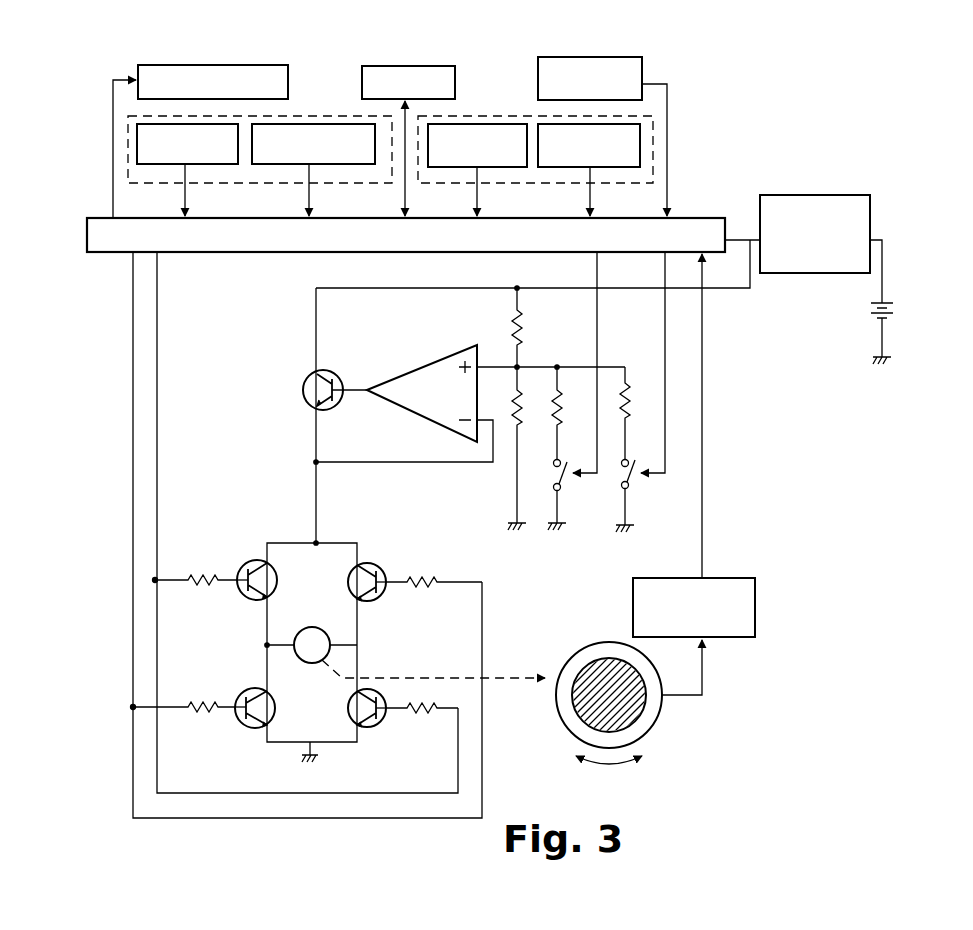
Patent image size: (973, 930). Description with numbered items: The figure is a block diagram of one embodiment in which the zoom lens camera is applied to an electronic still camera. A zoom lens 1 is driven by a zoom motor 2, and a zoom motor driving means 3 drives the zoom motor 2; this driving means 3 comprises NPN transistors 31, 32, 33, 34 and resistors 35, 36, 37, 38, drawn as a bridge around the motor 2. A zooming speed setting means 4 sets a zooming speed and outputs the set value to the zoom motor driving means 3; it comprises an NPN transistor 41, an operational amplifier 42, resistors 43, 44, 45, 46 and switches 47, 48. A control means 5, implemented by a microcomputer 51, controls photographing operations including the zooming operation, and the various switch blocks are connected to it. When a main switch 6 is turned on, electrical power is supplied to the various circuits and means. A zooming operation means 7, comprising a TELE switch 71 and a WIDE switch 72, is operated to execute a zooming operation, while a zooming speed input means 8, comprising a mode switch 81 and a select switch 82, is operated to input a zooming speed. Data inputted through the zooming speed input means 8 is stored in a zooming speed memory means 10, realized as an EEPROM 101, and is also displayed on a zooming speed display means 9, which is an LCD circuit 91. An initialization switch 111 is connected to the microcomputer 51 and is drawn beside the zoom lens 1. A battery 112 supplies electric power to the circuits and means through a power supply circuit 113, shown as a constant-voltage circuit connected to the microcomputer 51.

The zoom lens 1 is at (653, 730).
The zoom motor 2 is at (307, 627).
The zoom motor driving means 3 is at (338, 561).
The zooming speed setting means 4 is at (487, 397).
The control means 5 is at (376, 264).
The microcomputer 51 is at (98, 254).
The main switch 6 is at (615, 57).
The zooming operation means 7 is at (653, 170).
The TELE switch 71 is at (488, 122).
The WIDE switch 72 is at (655, 125).
The zooming speed input means 8 is at (128, 170).
The mode switch 81 is at (137, 145).
The select switch 82 is at (282, 166).
The zooming speed display means 9 is at (201, 113).
The LCD circuit 91 is at (251, 65).
The zooming speed memory means 10 is at (419, 112).
The EEPROM 101 is at (434, 66).
The initialization switch 111 is at (757, 622).
The battery 112 is at (898, 307).
The power supply circuit 113 is at (810, 275).
The NPN transistor 31 is at (253, 560).
The NPN transistor 32 is at (253, 728).
The NPN transistor 33 is at (368, 560).
The NPN transistor 34 is at (373, 728).
The resistor 35 is at (205, 572).
The resistor 36 is at (198, 715).
The resistor 37 is at (418, 590).
The resistor 38 is at (418, 718).
The NPN transistor 41 is at (330, 374).
The operational amplifier 42 is at (420, 375).
The resistor 43 is at (525, 331).
The resistor 44 is at (525, 407).
The resistor 45 is at (562, 405).
The resistor 46 is at (630, 405).
The switch 47 is at (563, 470).
The switch 48 is at (635, 478).